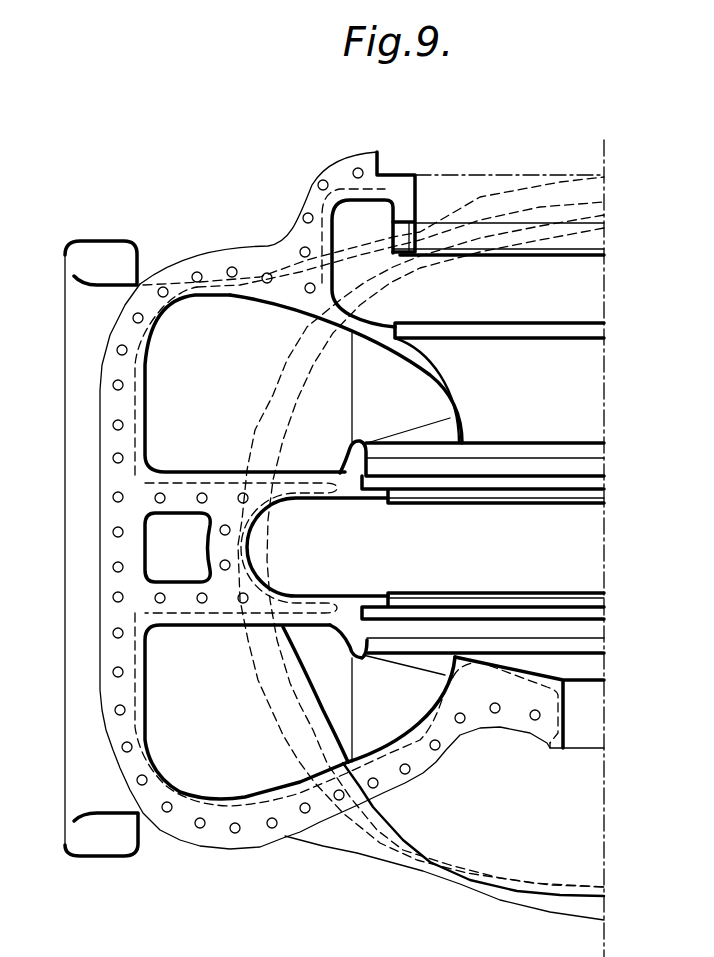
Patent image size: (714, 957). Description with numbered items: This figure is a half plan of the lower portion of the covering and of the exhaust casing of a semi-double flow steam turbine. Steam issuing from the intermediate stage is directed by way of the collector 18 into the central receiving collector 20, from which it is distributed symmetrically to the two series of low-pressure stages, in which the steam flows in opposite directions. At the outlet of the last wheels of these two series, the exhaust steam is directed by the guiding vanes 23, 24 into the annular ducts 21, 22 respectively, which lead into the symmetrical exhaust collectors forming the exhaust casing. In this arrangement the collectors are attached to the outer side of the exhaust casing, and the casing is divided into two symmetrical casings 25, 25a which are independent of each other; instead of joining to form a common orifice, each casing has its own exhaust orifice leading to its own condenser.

The collector 18 is at (333, 238).
The central receiving collector 20 is at (290, 595).
The annular duct 21 is at (438, 384).
The annular duct 22 is at (363, 400).
The guiding vanes 23 is at (432, 718).
The guiding vanes 24 is at (365, 700).
The exhaust casing 25 is at (140, 403).
The exhaust casing 25a is at (140, 716).